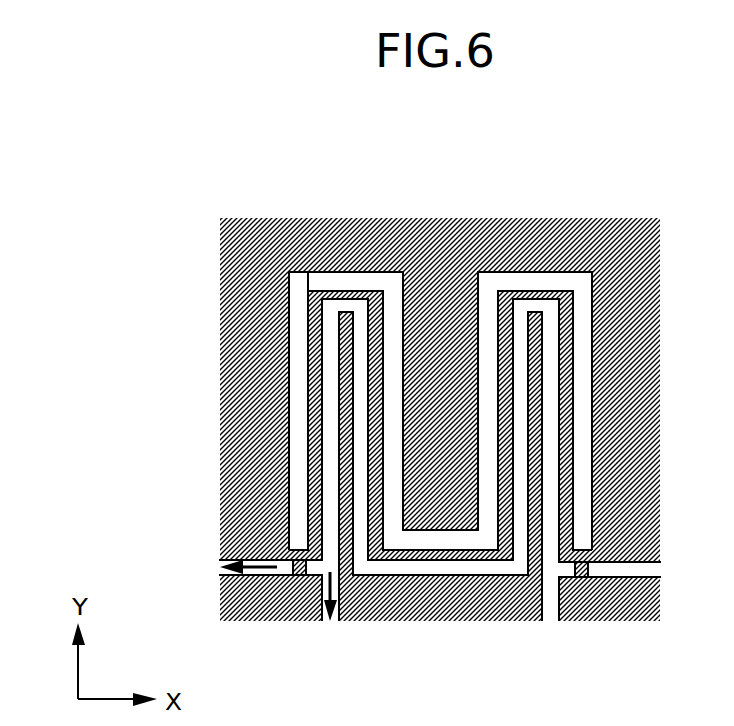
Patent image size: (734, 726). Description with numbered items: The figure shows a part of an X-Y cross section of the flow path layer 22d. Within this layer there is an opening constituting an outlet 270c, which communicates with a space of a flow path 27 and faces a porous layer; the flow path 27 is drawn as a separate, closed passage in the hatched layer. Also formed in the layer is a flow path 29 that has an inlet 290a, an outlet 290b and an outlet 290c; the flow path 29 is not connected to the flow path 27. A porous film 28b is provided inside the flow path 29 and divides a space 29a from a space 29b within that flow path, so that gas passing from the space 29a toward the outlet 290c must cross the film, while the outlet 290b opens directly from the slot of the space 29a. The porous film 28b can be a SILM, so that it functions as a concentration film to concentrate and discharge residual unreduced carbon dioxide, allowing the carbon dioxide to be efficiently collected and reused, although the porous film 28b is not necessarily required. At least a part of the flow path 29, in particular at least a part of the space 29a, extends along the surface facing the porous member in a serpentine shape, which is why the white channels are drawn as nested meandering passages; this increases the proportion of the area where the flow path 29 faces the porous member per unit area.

The flow path layer 22d is at (156, 197).
The flow path 27 is at (287, 382).
The outlet 270c is at (298, 437).
The flow path 29 is at (63, 455).
The space 29a is at (328, 515).
The inlet 290a is at (345, 460).
The space 29b is at (282, 561).
The outlet 290c is at (208, 558).
The porous film 28b is at (293, 576).
The outlet 290b is at (342, 628).